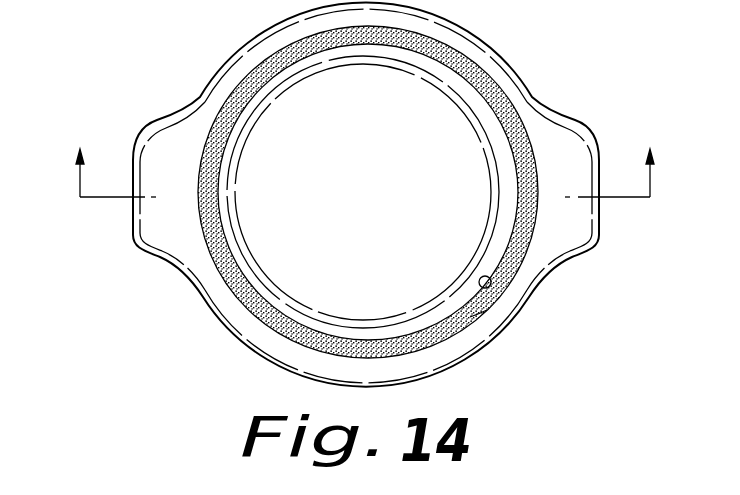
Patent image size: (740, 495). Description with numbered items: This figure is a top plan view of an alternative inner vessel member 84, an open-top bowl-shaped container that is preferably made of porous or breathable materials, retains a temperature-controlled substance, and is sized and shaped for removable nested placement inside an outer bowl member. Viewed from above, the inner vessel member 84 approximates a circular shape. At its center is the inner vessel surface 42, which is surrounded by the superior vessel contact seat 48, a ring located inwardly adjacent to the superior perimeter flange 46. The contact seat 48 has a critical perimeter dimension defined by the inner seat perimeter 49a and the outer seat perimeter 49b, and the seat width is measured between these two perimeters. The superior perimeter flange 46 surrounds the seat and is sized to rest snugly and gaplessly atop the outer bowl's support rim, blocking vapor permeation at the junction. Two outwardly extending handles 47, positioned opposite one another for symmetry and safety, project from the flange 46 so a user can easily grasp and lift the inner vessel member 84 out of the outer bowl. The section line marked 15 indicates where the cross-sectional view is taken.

The inner vessel surface 42 is at (435, 117).
The superior perimeter flange 46 is at (530, 91).
The outwardly extending handle 47 is at (131, 219).
The superior vessel contact seat 48 is at (293, 47).
The inner seat perimeter 49a is at (489, 279).
The outer seat perimeter 49b is at (487, 311).
The inner vessel member 84 is at (213, 74).
The section line for FIG. 15 is at (99, 130).